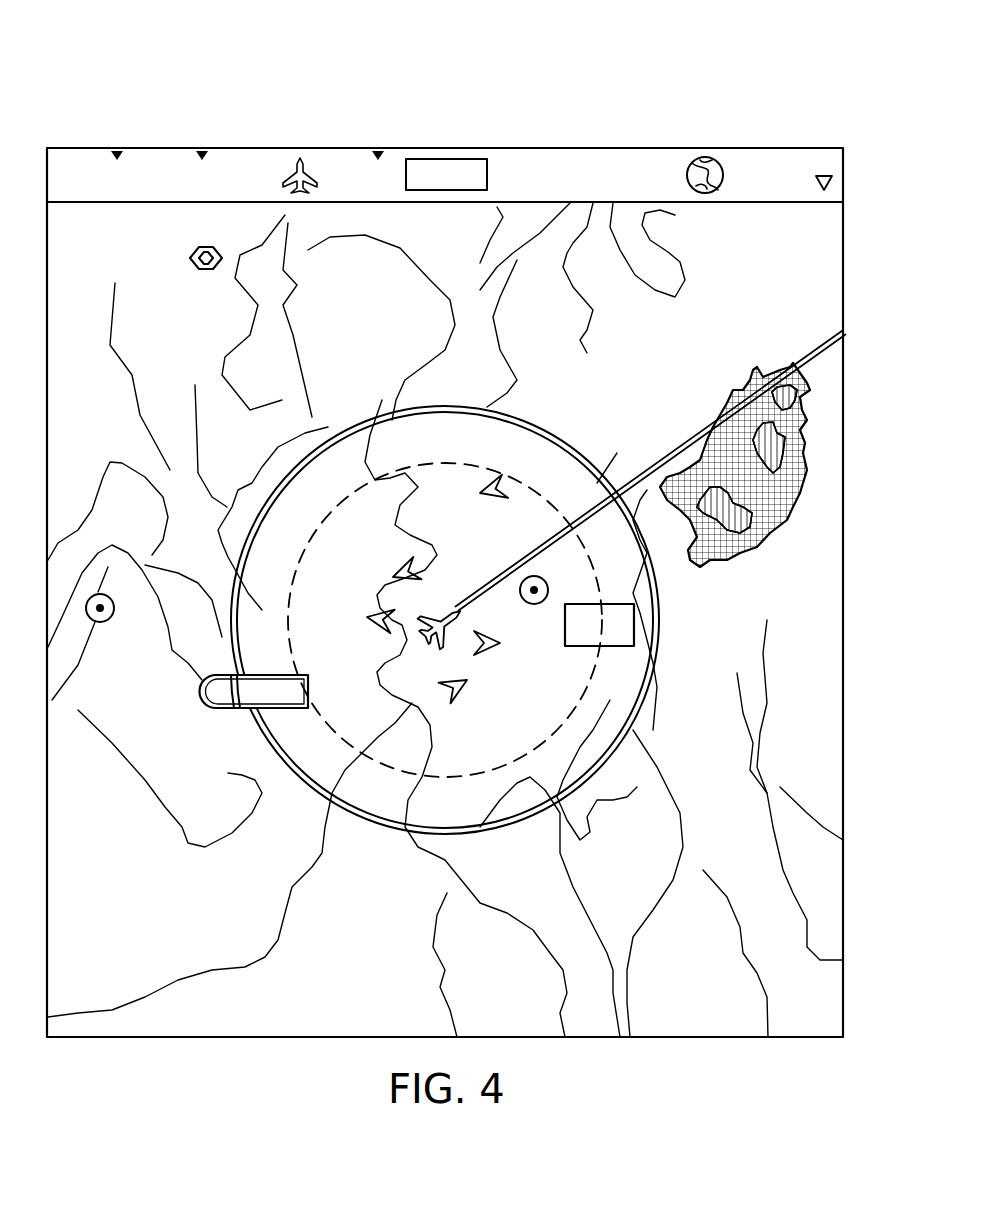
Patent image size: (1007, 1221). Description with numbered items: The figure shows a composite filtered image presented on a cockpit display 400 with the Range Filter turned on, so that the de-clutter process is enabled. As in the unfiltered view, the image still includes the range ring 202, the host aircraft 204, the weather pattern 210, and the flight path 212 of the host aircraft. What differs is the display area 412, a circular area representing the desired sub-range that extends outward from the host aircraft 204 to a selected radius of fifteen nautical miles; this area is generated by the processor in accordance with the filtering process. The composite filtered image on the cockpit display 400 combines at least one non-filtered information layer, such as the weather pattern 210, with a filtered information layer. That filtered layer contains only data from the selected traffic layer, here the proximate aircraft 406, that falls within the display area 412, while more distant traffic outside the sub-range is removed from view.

The cockpit display 400 is at (814, 97).
The range ring 202 is at (202, 690).
The host aircraft 204 is at (450, 607).
The weather pattern 210 is at (787, 537).
The flight path 212 is at (672, 454).
The proximate aircraft 406 is at (380, 622).
The display area 412 is at (636, 627).